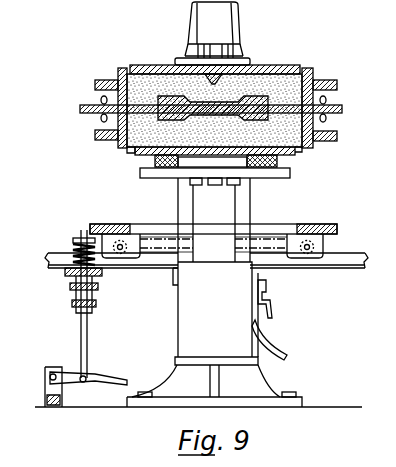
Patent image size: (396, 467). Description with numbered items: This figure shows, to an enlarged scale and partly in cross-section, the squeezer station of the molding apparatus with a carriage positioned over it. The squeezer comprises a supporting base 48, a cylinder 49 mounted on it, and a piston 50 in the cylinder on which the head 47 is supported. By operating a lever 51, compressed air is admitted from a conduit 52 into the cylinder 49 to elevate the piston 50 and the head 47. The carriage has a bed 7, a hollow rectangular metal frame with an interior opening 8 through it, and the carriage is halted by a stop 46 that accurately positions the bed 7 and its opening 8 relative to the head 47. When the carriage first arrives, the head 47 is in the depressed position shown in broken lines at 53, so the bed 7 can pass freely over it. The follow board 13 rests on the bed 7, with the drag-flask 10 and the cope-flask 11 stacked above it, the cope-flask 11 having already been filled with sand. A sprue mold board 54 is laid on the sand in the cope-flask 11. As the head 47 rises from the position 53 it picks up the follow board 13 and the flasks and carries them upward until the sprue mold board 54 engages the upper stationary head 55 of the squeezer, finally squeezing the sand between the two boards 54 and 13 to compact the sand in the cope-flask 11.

The upper stationary head 55 is at (236, 62).
The sprue mold board 54 is at (282, 66).
The cope-flask 11 is at (315, 77).
The drag-flask 10 is at (310, 146).
The follow board 13 is at (137, 153).
The head 47 is at (291, 173).
The piston 50 is at (203, 207).
The opening 8 is at (291, 225).
The bed 7 is at (330, 233).
The depressed position of the head 53 is at (272, 248).
The stop 46 is at (80, 232).
The cylinder 49 is at (185, 320).
The supporting base 48 is at (268, 390).
The lever 51 is at (273, 312).
The conduit 52 is at (282, 350).